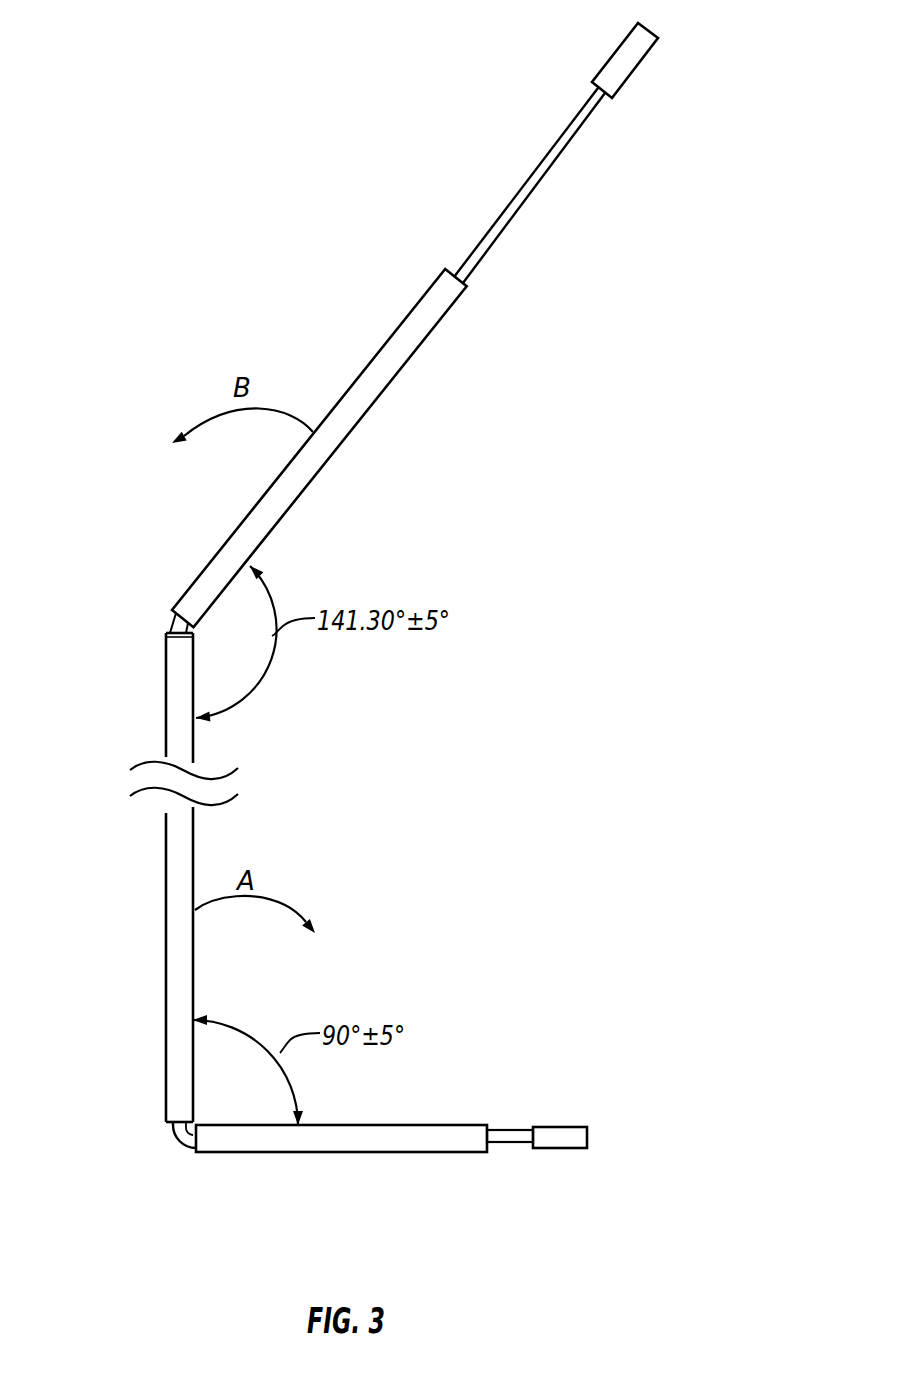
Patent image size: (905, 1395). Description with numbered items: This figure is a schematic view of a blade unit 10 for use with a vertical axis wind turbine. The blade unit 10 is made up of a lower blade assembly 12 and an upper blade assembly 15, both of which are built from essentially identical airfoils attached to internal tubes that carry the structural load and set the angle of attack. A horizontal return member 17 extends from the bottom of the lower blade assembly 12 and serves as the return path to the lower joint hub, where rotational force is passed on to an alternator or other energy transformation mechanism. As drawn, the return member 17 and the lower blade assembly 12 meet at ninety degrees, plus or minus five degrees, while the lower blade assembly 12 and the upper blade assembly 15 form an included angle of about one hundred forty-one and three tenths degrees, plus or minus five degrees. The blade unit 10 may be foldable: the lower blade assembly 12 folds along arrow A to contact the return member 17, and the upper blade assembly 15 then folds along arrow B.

The blade unit 10 is at (126, 111).
The lower blade assembly 12 is at (147, 633).
The upper blade assembly 15 is at (638, 20).
The horizontal return member 17 is at (583, 1160).